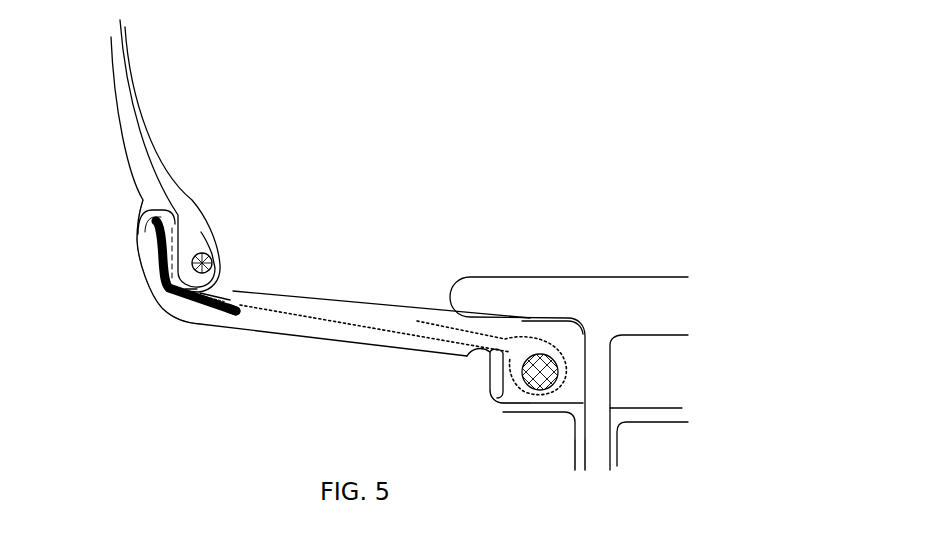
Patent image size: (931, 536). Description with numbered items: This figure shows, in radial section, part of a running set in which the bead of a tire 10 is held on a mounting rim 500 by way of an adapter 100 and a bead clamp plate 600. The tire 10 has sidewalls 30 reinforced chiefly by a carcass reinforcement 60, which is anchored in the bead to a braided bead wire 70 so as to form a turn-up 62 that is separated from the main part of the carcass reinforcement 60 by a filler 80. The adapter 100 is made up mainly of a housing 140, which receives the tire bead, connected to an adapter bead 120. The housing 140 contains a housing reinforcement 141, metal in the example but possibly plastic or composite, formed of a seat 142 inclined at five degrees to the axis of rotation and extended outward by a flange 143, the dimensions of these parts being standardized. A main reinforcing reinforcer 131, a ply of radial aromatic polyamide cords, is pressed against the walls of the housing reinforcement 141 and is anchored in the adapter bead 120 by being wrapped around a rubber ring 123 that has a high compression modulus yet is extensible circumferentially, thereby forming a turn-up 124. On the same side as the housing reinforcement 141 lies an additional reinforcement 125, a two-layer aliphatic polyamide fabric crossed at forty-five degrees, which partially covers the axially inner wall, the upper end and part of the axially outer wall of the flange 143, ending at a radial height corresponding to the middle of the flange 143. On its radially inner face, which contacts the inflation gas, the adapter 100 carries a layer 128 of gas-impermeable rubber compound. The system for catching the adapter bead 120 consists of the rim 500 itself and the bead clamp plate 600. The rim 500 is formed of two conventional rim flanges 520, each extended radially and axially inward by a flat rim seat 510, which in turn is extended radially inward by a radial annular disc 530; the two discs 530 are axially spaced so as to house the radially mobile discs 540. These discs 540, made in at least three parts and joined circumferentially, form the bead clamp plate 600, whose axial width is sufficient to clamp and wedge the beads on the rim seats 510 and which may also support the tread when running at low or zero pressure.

The tire 10 is at (160, 105).
The sidewall 30 is at (110, 87).
The carcass reinforcement 60 is at (172, 186).
The turn-up 62 is at (141, 200).
The bead wire 70 is at (222, 266).
The filler 80 is at (193, 218).
The adapter 100 is at (358, 248).
The adapter bead 120 is at (503, 394).
The rubber ring 123 is at (557, 370).
The turn-up 124 is at (512, 340).
The additional reinforcement 125 is at (232, 297).
The layer of gas-impermeable rubber compound 128 is at (392, 307).
The main reinforcing reinforcer 131 is at (282, 314).
The housing 140 is at (170, 305).
The housing reinforcement 141 is at (153, 291).
The seat 142 is at (212, 313).
The flange 143 is at (153, 240).
The mounting rim 500 is at (638, 413).
The rim seat 510 is at (542, 407).
The rim flange 520 is at (484, 358).
The radial annular disc 530 is at (577, 457).
The radially mobile disc 540 is at (600, 448).
The bead clamp plate 600 is at (552, 298).